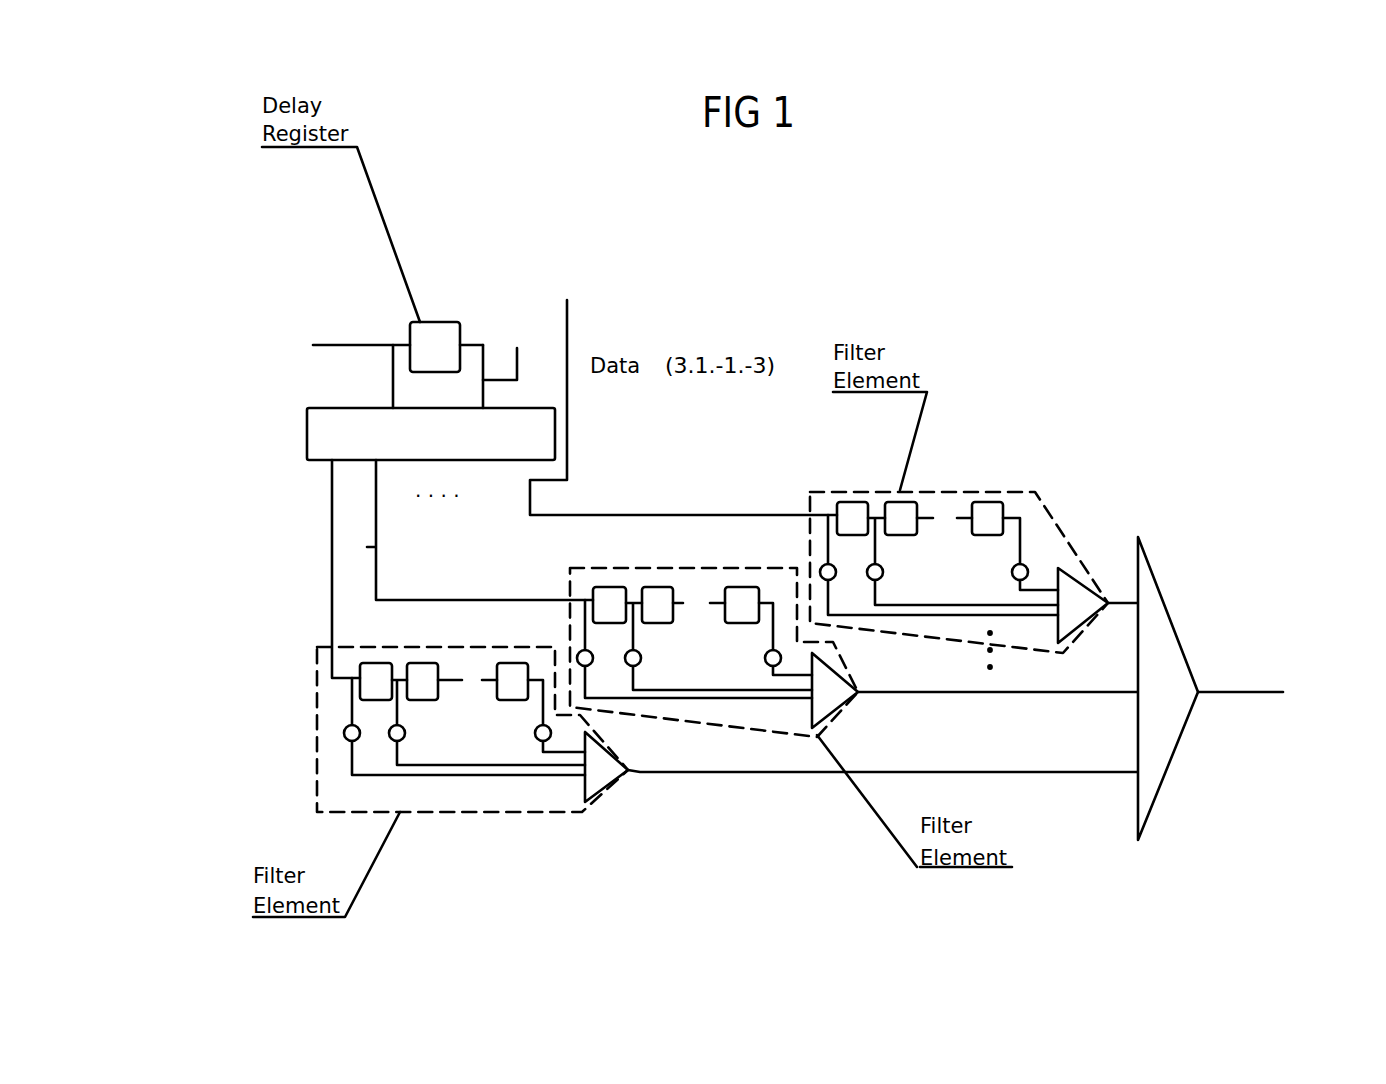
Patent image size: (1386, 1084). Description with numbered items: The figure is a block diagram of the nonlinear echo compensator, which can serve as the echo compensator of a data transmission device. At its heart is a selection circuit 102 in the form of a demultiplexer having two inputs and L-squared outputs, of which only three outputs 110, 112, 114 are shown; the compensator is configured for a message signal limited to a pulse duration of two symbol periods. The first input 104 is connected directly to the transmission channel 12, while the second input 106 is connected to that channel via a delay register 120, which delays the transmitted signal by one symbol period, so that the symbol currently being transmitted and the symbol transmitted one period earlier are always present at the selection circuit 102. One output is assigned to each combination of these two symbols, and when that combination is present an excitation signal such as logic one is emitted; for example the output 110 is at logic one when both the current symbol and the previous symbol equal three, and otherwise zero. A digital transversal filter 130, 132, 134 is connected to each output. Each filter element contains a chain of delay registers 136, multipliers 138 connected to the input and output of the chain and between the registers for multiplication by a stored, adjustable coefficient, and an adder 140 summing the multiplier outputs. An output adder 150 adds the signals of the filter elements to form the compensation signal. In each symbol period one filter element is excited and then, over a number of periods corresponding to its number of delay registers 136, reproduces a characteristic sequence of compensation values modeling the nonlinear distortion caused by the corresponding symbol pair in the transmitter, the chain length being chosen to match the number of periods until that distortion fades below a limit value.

The transmission channel 12 is at (327, 343).
The delay register 120 is at (434, 322).
The second input 106 is at (519, 310).
The first input 104 is at (393, 380).
The selection circuit 102 is at (307, 432).
The output 110 is at (292, 482).
The output 112 is at (292, 545).
The output 114 is at (567, 300).
The digital transversal filter 130 is at (317, 720).
The digital transversal filter 132 is at (792, 735).
The digital transversal filter 134 is at (1032, 512).
The delay registers 136 is at (655, 587).
The multipliers 138 is at (773, 666).
The adder 140 is at (598, 802).
The output adder 150 is at (1150, 582).